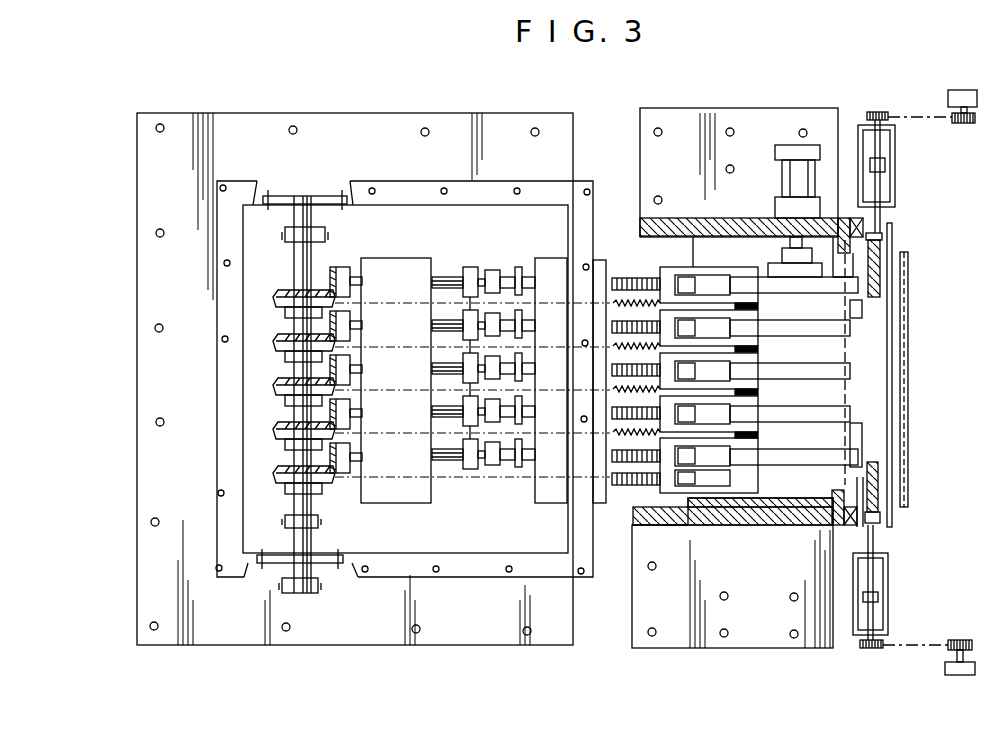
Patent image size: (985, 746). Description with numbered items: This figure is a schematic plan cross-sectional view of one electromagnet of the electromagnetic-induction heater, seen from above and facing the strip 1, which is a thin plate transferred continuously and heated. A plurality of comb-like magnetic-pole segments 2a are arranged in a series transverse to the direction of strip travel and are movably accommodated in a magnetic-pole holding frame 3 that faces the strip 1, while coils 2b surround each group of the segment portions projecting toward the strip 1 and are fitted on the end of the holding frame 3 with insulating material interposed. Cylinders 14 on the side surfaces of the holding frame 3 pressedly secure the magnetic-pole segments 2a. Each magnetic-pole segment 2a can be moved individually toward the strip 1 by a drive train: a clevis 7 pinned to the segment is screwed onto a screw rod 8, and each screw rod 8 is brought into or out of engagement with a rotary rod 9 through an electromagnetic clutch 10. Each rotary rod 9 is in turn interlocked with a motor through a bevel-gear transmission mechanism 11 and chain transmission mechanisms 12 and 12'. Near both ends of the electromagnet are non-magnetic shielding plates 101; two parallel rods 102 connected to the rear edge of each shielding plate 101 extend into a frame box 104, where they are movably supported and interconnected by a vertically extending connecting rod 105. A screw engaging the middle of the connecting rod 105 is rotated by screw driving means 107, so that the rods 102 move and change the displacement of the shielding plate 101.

The strip 1 is at (908, 340).
The magnetic-pole segments 2a is at (853, 327).
The coils 2b is at (865, 226).
The magnetic-pole holding frame 3 is at (753, 222).
The clevis 7 is at (706, 272).
The screw rod 8 is at (630, 278).
The rotary rod 9 is at (447, 276).
The electromagnetic clutch 10 is at (488, 292).
The bevel-gear transmission mechanism 11 is at (348, 268).
The chain transmission mechanism 12 is at (303, 443).
The chain transmission mechanism 12' is at (335, 530).
The cylinder 14 is at (803, 182).
The shielding plate 101 is at (880, 256).
The parallel rods 102 is at (880, 200).
The frame box 104 is at (866, 116).
The connecting rod 105 is at (890, 163).
The screw driving means 107 is at (952, 112).